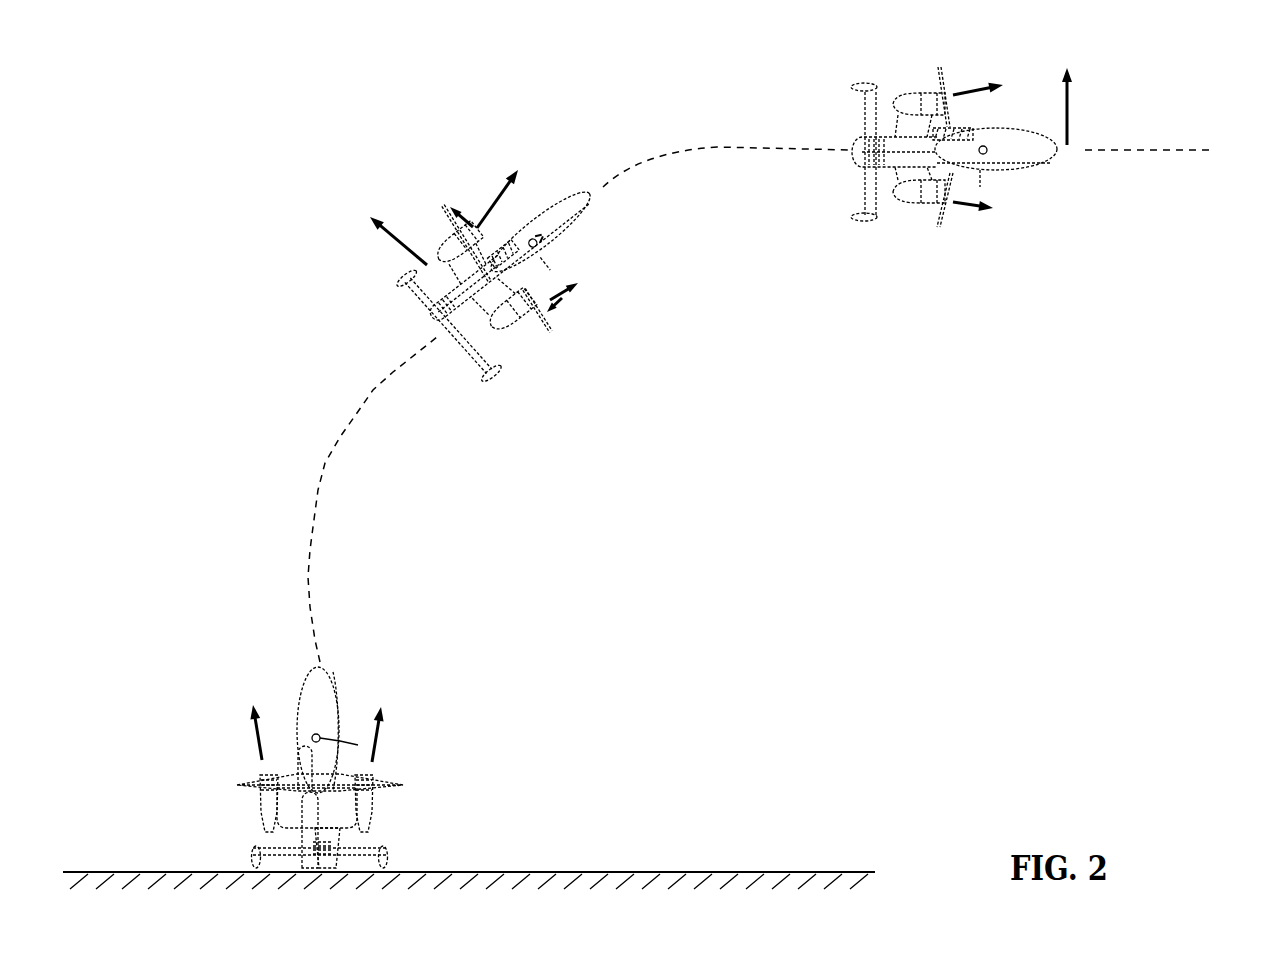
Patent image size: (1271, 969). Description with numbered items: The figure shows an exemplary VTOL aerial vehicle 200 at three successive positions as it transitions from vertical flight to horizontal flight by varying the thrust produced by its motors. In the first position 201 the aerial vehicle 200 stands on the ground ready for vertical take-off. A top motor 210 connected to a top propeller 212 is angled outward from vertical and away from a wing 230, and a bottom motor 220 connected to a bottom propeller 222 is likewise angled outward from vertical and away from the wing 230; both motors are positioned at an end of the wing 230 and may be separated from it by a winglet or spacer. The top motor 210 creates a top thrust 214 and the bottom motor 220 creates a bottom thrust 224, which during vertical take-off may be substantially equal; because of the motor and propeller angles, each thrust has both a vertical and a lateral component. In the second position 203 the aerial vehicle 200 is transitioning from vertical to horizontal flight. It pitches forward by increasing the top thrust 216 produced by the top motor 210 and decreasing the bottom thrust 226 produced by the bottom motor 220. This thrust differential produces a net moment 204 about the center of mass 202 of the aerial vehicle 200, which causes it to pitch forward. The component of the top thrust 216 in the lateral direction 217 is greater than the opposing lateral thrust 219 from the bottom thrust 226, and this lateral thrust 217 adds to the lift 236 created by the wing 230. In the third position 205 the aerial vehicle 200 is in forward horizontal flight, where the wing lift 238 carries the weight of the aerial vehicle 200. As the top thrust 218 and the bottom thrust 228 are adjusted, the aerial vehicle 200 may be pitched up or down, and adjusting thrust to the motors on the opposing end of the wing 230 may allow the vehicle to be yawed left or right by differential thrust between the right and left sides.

The VTOL aerial vehicle 200 is at (852, 169).
The first position 201 is at (428, 647).
The center of mass 202 is at (986, 152).
The second position 203 is at (640, 124).
The net moment 204 is at (540, 238).
The third position 205 is at (1164, 124).
The top motor 210 is at (933, 100).
The top propeller 212 is at (938, 74).
The top thrust 214 is at (265, 737).
The top thrust 216 is at (507, 236).
The lateral direction 217 is at (467, 222).
The top thrust 218 is at (983, 94).
The lateral thrust 219 is at (566, 308).
The bottom motor 220 is at (932, 206).
The bottom propeller 222 is at (943, 217).
The bottom thrust 224 is at (363, 733).
The bottom thrust 226 is at (563, 306).
The bottom thrust 228 is at (963, 213).
The wing 230 is at (985, 137).
The lift 236 is at (405, 258).
The wing lift 238 is at (1068, 108).